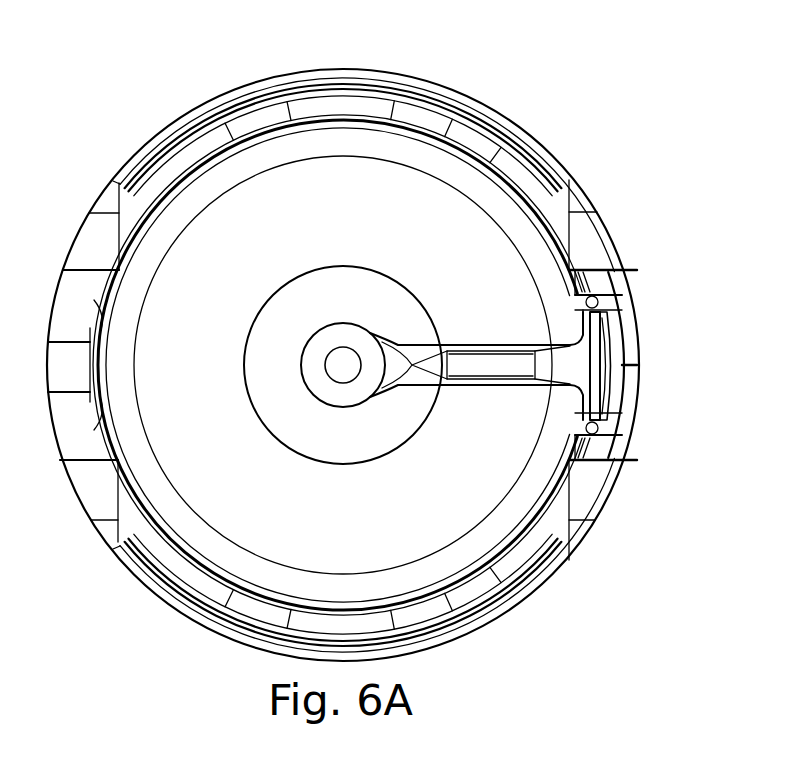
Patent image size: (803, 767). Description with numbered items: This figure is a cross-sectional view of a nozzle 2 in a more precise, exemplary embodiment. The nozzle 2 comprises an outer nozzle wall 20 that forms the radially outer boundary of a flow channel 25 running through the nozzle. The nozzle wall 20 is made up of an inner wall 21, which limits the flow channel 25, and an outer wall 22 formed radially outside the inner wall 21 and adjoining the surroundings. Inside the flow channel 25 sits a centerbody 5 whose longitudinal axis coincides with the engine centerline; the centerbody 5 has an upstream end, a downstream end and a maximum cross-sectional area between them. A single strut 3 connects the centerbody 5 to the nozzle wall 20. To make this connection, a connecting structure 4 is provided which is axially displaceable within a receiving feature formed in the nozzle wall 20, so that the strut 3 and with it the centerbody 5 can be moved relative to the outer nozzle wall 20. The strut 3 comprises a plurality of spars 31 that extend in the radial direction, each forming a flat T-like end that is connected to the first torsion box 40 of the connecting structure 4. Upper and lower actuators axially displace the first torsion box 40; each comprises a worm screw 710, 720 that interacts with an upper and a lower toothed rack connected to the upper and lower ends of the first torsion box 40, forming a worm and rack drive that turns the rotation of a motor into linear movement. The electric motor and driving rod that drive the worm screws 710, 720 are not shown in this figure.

The nozzle 2 is at (620, 178).
The outer nozzle wall 20 is at (485, 133).
The inner wall 21 is at (210, 160).
The outer wall 22 is at (392, 72).
The flow channel 25 is at (381, 221).
The strut 3 is at (443, 388).
The spars 31 is at (517, 388).
The connecting structure 4 is at (606, 384).
The first torsion box 40 is at (612, 330).
The centerbody 5 is at (360, 447).
The worm screw 710 is at (600, 301).
The worm screw 720 is at (600, 432).